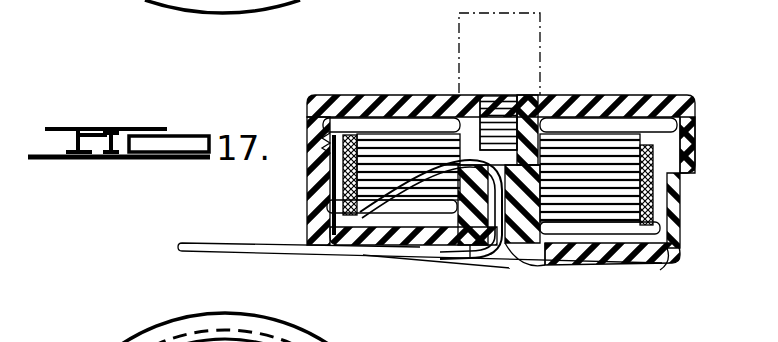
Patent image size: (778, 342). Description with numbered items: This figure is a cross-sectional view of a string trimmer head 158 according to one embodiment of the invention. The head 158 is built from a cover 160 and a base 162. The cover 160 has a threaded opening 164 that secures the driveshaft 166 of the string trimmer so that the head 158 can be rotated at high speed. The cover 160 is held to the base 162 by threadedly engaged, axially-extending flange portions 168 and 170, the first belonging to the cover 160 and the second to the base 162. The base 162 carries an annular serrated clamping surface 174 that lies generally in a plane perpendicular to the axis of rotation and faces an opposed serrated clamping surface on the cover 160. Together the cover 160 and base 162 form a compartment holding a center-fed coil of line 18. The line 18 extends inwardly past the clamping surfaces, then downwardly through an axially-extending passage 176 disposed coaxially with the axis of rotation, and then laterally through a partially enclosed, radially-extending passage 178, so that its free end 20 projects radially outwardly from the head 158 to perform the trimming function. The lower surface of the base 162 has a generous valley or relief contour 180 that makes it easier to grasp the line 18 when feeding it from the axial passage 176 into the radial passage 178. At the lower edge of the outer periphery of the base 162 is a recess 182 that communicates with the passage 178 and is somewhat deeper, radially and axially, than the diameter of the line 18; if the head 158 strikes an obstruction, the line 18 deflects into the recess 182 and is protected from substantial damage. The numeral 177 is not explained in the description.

The line 18 is at (390, 206).
The free end 20 is at (220, 242).
The string trimmer head 158 is at (570, 92).
The cover 160 is at (359, 92).
The base 162 is at (598, 265).
The threaded opening 164 is at (490, 100).
The driveshaft 166 is at (460, 33).
The axially-extending flange portion 168 is at (322, 160).
The axially-extending flange portion 170 is at (340, 180).
The serrated clamping surface 174 is at (548, 197).
The axially-extending passage 176 is at (503, 262).
The bobbin flange 177 is at (563, 137).
The radially-extending passage 178 is at (420, 256).
The relief contour 180 is at (477, 260).
The recess 182 is at (667, 262).